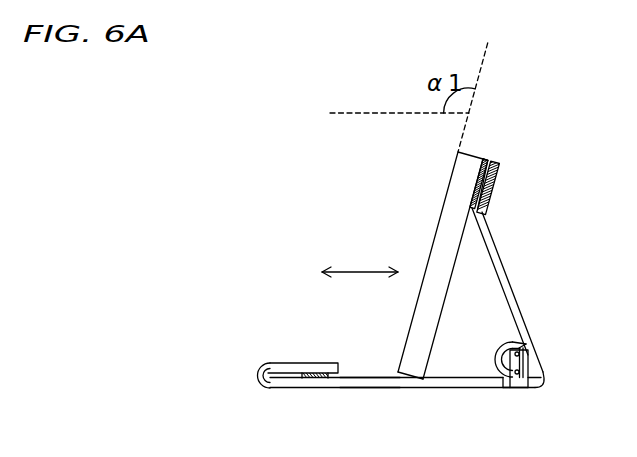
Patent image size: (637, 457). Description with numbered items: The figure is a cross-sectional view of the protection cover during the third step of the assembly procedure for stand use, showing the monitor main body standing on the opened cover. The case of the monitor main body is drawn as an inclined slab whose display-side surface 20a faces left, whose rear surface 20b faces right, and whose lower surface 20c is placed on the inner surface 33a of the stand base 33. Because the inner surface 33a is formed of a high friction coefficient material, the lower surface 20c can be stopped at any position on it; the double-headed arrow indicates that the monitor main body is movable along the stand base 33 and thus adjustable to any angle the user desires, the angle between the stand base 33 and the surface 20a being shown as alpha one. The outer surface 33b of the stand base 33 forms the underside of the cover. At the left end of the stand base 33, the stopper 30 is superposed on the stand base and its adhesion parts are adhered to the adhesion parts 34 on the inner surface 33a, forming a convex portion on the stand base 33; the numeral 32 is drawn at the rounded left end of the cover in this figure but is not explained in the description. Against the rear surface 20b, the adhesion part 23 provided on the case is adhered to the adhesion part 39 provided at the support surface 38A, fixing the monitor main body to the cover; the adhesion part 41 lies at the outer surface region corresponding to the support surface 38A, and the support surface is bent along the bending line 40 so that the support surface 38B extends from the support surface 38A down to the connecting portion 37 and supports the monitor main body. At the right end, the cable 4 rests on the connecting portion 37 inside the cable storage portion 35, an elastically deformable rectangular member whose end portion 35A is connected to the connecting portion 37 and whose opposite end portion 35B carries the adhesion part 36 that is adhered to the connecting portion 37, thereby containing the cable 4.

The cable 4 is at (532, 361).
The surface 20a is at (438, 215).
The rear surface 20b is at (456, 258).
The lower surface 20c is at (410, 380).
The adhesion part 23 is at (487, 160).
The stopper 30 is at (308, 363).
The end cap 32 is at (257, 375).
The stand base 33 is at (470, 388).
The inner surface 33a is at (371, 378).
The outer surface 33b is at (376, 388).
The adhesion parts 34 is at (303, 375).
The cable storage portion 35 is at (495, 362).
The end portion 35A is at (508, 388).
The end portion 35B is at (531, 339).
The adhesion part 36 is at (521, 347).
The connecting portion 37 is at (545, 380).
The support surface 38A is at (488, 160).
The support surface 38B is at (518, 307).
The adhesion part 39 is at (487, 160).
The bending line 40 is at (485, 211).
The adhesion part 41 is at (497, 182).